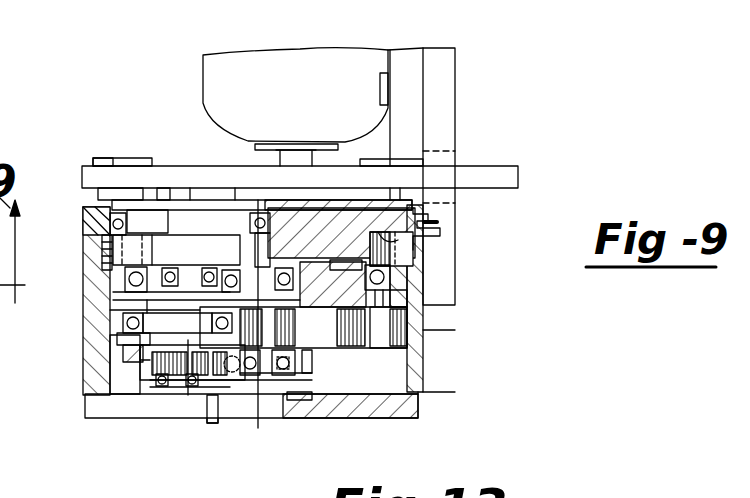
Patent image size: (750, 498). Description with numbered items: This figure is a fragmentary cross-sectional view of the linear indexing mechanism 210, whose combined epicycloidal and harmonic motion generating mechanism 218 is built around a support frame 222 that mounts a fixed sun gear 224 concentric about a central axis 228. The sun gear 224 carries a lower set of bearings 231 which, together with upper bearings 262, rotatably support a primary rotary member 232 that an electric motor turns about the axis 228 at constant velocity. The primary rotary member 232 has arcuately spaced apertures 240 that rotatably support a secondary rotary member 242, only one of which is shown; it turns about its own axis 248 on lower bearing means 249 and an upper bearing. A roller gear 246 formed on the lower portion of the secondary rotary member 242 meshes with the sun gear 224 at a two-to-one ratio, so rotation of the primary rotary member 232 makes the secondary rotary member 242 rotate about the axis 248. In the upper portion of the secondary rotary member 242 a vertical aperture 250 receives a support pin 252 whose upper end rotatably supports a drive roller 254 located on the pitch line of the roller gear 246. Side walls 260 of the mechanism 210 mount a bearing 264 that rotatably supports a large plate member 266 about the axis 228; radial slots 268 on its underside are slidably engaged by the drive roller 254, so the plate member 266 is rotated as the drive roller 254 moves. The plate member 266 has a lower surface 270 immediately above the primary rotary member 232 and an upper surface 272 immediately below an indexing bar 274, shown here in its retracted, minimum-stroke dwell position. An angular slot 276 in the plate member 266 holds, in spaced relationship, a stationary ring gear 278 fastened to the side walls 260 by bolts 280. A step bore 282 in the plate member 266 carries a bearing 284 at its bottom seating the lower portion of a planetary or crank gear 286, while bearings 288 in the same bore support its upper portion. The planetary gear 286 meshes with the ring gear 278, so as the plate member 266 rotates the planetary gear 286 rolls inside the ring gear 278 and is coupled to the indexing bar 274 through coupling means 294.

The linear indexing mechanism 210 is at (12, 58).
The combined epicycloidal and harmonic motion generating mechanism 218 is at (440, 364).
The support frame 222 is at (322, 418).
The fixed sun gear 224 is at (315, 368).
The axis 228 is at (258, 428).
The lower set of bearings 231 is at (314, 355).
The primary rotary member 232 is at (405, 342).
The arcuately spaced apertures 240 is at (118, 345).
The secondary rotary member 242 is at (188, 340).
The roller gear 246 is at (150, 352).
The axis 248 is at (160, 378).
The lower bearing means 249 is at (172, 370).
The vertical aperture 250 is at (222, 300).
The support pin 252 is at (157, 363).
The drive roller 254 is at (197, 300).
The side walls 260 is at (428, 392).
The upper bearings 262 is at (325, 230).
The bearing 264 is at (397, 290).
The plate member 266 is at (445, 221).
The radial slots 268 is at (156, 296).
The lower surface 270 is at (340, 323).
The upper surface 272 is at (398, 183).
The indexing bar 274 is at (222, 215).
The angular slot 276 is at (424, 205).
The ring gear 278 is at (98, 251).
The bolts 280 is at (97, 160).
The step bore 282 is at (297, 225).
The bearing 284 is at (237, 200).
The planetary or crank gear 286 is at (256, 230).
The bearings 288 is at (270, 222).
The coupling means 294 is at (112, 158).